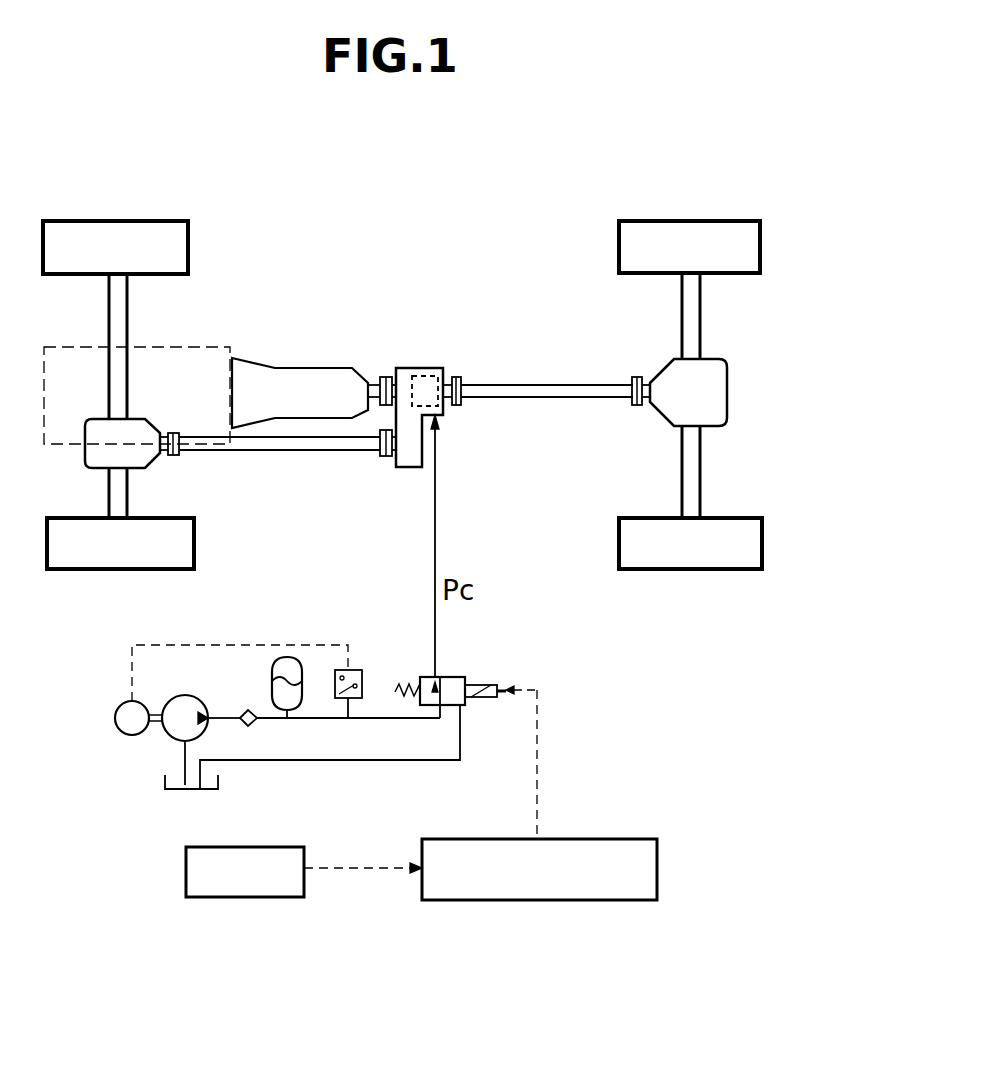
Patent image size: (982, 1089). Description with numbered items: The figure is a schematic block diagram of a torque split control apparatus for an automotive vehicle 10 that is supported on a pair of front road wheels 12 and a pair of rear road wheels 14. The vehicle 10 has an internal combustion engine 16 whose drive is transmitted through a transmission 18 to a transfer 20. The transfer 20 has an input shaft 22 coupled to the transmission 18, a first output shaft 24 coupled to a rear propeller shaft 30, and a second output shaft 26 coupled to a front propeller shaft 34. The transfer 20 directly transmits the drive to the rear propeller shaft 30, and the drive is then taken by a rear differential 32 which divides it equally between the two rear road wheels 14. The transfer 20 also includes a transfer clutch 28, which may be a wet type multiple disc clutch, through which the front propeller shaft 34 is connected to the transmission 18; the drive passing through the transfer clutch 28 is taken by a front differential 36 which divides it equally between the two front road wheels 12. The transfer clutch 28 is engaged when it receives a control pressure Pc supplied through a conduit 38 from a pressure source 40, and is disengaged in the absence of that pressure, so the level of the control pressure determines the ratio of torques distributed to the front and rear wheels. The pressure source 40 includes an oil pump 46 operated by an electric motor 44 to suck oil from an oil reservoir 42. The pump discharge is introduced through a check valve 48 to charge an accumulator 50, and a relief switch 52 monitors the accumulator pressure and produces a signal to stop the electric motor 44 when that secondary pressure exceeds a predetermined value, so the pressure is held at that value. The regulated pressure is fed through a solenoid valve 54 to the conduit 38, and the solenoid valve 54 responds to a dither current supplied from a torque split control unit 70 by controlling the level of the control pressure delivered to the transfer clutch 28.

The automotive vehicle 10 is at (408, 258).
The front road wheels 12 is at (188, 241).
The rear road wheels 14 is at (728, 221).
The internal combustion engine 16 is at (192, 347).
The transmission 18 is at (283, 368).
The transfer 20 is at (418, 358).
The input shaft 22 is at (392, 380).
The first output shaft 24 is at (462, 408).
The second output shaft 26 is at (392, 456).
The transfer clutch 28 is at (440, 368).
The rear propeller shaft 30 is at (545, 387).
The rear differential 32 is at (718, 357).
The front propeller shaft 34 is at (310, 450).
The front differential 36 is at (86, 466).
The conduit 38 is at (436, 497).
The pressure source 40 is at (531, 658).
The oil reservoir 42 is at (188, 790).
The electric motor 44 is at (149, 700).
The oil pump 46 is at (191, 696).
The check valve 48 is at (250, 710).
The accumulator 50 is at (293, 657).
The relief switch 52 is at (355, 670).
The solenoid valve 54 is at (430, 677).
The torque split control unit 70 is at (473, 839).